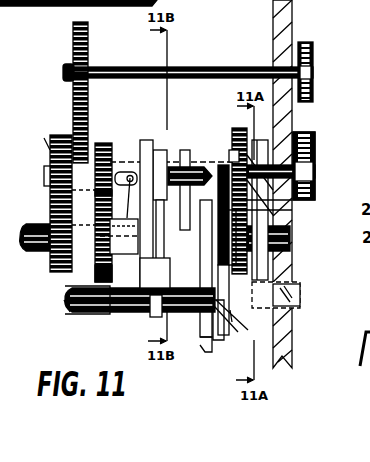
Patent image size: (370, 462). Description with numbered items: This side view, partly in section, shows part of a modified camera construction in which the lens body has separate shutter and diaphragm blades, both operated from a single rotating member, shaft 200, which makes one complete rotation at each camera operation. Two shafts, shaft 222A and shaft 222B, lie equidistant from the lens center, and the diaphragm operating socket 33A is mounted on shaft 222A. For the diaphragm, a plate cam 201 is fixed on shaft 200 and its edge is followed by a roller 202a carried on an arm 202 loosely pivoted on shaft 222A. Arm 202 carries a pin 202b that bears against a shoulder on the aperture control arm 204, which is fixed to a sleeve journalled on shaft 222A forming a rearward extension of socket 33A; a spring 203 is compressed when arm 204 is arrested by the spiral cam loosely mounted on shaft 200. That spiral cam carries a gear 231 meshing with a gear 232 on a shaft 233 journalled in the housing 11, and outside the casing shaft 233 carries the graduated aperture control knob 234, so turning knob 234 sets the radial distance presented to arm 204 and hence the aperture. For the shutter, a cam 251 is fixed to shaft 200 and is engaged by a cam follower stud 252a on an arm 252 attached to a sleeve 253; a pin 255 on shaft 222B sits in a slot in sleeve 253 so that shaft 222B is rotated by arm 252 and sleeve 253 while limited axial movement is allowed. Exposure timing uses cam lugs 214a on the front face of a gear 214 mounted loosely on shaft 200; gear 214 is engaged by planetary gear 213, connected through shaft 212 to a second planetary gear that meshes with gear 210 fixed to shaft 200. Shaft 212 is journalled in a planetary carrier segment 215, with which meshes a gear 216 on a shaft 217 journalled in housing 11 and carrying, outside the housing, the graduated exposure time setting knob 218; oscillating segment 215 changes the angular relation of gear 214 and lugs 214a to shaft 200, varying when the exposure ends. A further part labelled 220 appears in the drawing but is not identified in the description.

The housing 11 is at (47, 146).
The gear 216 is at (72, 45).
The shaft 217 is at (146, 67).
The graduated exposure time setting knob 218 is at (304, 42).
The planetary carrier segment 215 is at (90, 124).
The planetary gear 213 is at (103, 143).
The sleeve 253 is at (130, 172).
The cam follower stud 252a is at (151, 150).
The arm 252 is at (165, 150).
The gear 232 is at (236, 127).
The aperture control arm 204 is at (232, 150).
The shaft 222B is at (183, 167).
The shaft 233 is at (291, 123).
The graduated aperture control knob 234 is at (312, 134).
The shaft 212 is at (47, 168).
The shaft 200 is at (30, 224).
The pin 255 is at (125, 236).
The plate cam 201 is at (214, 251).
The plate 220 is at (236, 237).
The gear 231 is at (292, 213).
The gear 210 is at (52, 258).
The gear 214 is at (98, 268).
The cam lugs 214a is at (68, 306).
The roller 202a is at (160, 273).
The socket 33A is at (293, 289).
The shaft 222A is at (92, 316).
The cam 251 is at (155, 318).
The arm 202 is at (200, 340).
The spring 203 is at (217, 341).
The pin 202b is at (291, 341).